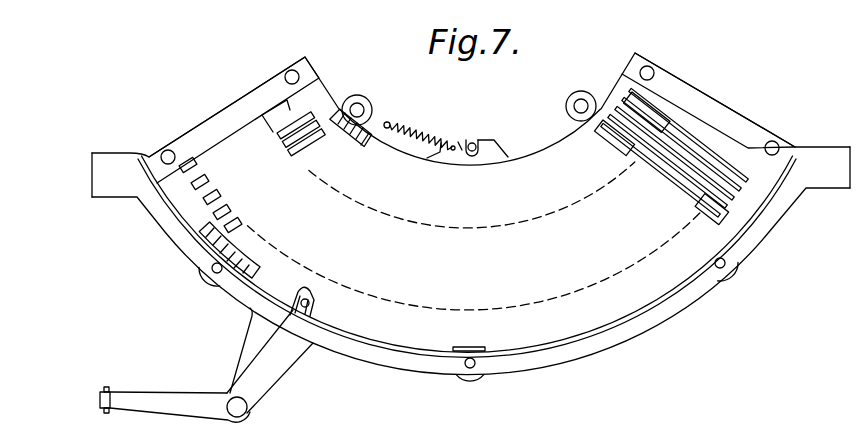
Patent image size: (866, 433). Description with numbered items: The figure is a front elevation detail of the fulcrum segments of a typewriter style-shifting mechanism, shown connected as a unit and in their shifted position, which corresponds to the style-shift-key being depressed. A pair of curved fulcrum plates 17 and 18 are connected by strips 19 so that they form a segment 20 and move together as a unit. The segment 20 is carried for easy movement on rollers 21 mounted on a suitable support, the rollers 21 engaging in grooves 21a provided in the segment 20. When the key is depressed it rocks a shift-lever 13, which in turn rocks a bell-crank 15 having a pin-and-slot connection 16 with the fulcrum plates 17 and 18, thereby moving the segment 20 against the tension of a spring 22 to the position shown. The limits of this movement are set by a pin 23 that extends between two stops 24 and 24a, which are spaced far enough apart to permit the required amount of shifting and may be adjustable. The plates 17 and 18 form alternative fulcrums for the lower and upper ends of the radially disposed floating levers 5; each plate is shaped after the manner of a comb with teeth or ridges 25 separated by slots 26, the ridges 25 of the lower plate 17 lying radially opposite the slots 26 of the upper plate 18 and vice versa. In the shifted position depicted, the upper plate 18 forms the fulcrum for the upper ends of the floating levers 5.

The floating levers 5 is at (700, 156).
The shift-lever 13 is at (104, 390).
The bell-crank 15 is at (198, 398).
The pin-and-slot connection 16 is at (312, 304).
The lower fulcrum plate 17 is at (244, 227).
The upper fulcrum plate 18 is at (305, 168).
The strips 19 is at (217, 122).
The segment 20 is at (700, 77).
The rollers 21 is at (363, 97).
The grooves 21a is at (347, 103).
The spring 22 is at (422, 124).
The pin 23 is at (474, 142).
The stop 24 is at (494, 148).
The stop 24a is at (460, 140).
The teeth or ridges 25 is at (650, 150).
The slots 26 is at (627, 152).